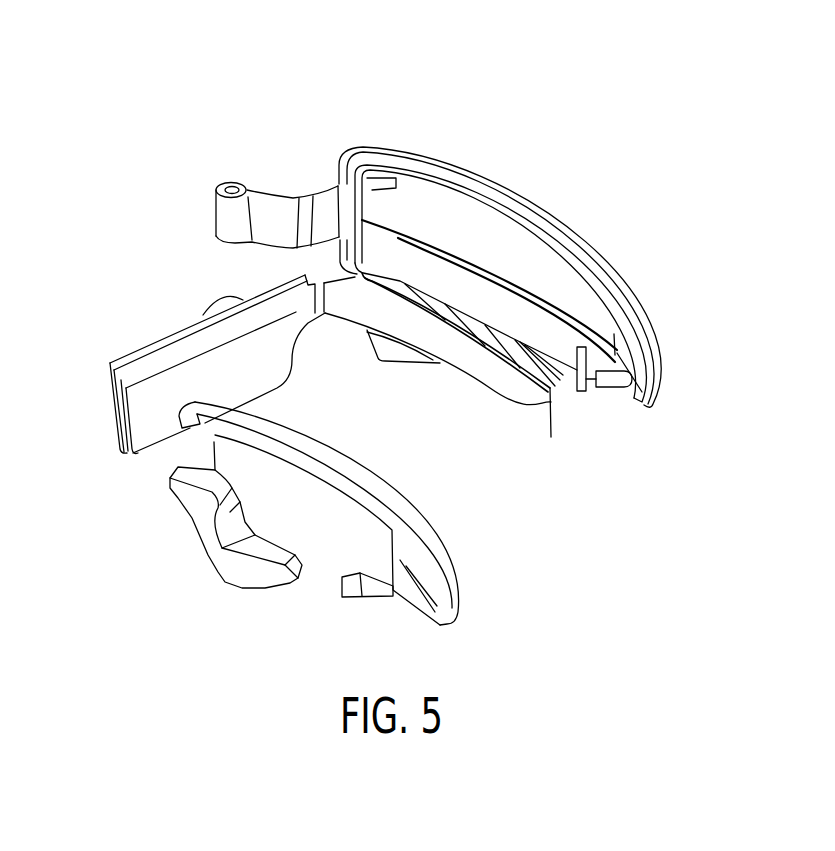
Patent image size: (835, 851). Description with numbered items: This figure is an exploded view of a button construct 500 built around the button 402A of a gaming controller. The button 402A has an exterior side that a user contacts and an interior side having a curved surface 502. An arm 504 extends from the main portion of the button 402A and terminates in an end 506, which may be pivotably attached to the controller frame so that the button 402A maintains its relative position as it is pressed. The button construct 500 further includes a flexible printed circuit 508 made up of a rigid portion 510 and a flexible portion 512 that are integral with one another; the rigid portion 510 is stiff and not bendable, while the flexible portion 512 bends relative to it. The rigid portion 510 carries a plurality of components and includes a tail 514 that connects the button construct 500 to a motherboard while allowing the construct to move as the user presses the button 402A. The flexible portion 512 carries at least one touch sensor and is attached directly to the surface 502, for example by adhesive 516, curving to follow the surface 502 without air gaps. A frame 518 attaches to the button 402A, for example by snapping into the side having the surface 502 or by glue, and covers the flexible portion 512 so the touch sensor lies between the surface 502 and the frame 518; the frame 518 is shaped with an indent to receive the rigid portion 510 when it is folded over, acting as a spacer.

The button construct 500 is at (197, 85).
The surface 502 is at (413, 212).
The arm 504 is at (296, 194).
The end 506 is at (211, 194).
The flexible printed circuit 508 is at (123, 315).
The rigid portion 510 is at (113, 413).
The flexible portion 512 is at (497, 384).
The tail 514 is at (108, 364).
The adhesive 516 is at (568, 366).
The frame 518 is at (433, 558).
The button 402A is at (542, 199).